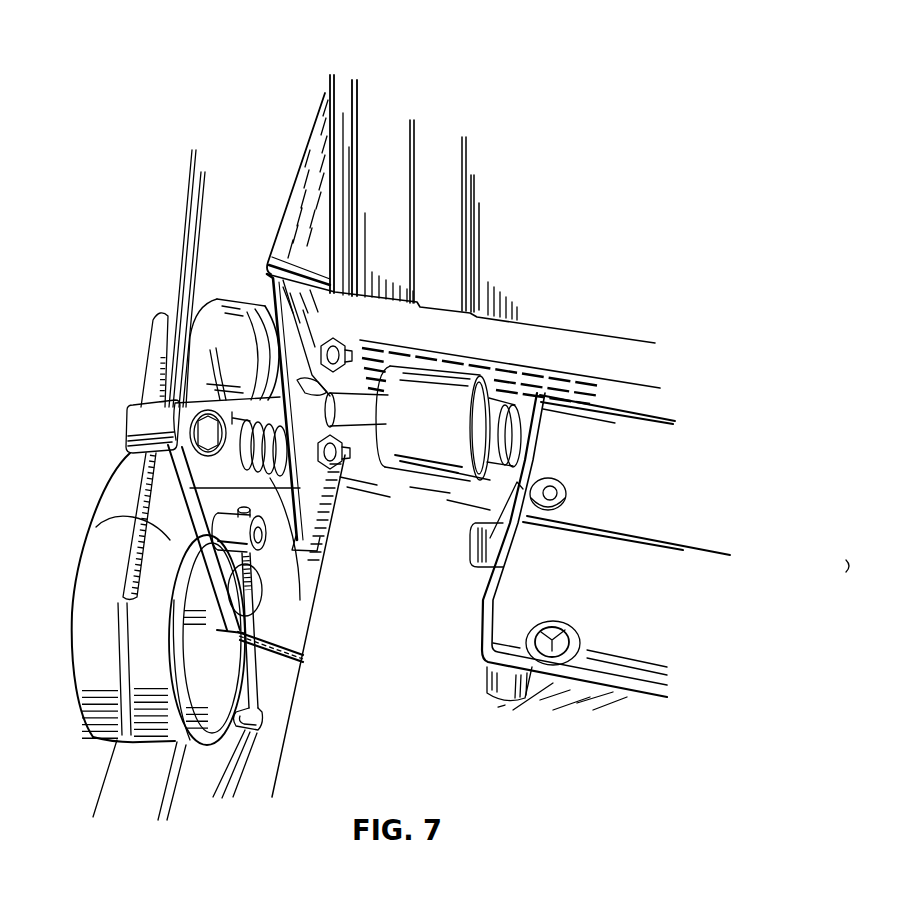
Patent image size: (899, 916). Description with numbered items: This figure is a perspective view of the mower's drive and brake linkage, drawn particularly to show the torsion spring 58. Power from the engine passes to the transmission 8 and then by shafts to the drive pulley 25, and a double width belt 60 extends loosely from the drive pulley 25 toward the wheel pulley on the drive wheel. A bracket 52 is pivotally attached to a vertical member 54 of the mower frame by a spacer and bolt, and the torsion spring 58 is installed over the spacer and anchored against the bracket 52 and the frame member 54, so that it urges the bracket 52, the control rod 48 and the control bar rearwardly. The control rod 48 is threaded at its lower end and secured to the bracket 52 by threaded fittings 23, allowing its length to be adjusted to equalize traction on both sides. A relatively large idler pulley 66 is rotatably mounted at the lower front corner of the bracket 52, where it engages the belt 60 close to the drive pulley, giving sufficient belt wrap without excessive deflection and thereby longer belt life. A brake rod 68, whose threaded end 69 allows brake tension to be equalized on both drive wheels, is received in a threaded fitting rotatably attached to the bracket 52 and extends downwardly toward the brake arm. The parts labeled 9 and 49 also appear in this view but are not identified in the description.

The transmission 8 is at (637, 393).
The nut 9 is at (360, 452).
The threaded fittings 23 is at (133, 408).
The drive pulley 25 is at (267, 337).
The control rod 48 is at (188, 231).
The toothed strap 49 is at (130, 540).
The bracket 52 is at (125, 623).
The vertical member 54 is at (330, 515).
The torsion spring 58 is at (250, 562).
The double width belt 60 is at (201, 307).
The idler pulley 66 is at (116, 475).
The brake rod 68 is at (257, 677).
The threaded end 69 is at (283, 568).